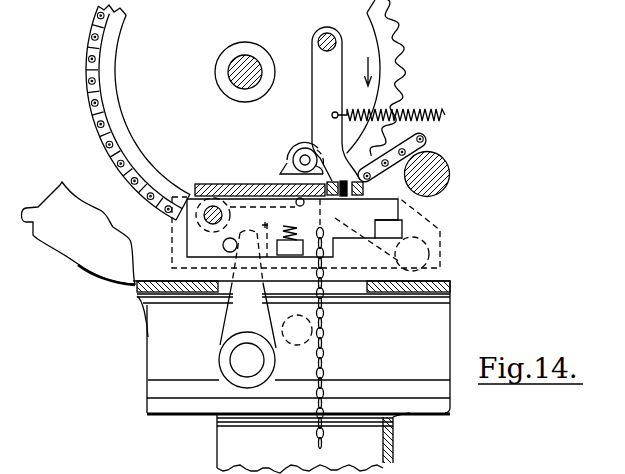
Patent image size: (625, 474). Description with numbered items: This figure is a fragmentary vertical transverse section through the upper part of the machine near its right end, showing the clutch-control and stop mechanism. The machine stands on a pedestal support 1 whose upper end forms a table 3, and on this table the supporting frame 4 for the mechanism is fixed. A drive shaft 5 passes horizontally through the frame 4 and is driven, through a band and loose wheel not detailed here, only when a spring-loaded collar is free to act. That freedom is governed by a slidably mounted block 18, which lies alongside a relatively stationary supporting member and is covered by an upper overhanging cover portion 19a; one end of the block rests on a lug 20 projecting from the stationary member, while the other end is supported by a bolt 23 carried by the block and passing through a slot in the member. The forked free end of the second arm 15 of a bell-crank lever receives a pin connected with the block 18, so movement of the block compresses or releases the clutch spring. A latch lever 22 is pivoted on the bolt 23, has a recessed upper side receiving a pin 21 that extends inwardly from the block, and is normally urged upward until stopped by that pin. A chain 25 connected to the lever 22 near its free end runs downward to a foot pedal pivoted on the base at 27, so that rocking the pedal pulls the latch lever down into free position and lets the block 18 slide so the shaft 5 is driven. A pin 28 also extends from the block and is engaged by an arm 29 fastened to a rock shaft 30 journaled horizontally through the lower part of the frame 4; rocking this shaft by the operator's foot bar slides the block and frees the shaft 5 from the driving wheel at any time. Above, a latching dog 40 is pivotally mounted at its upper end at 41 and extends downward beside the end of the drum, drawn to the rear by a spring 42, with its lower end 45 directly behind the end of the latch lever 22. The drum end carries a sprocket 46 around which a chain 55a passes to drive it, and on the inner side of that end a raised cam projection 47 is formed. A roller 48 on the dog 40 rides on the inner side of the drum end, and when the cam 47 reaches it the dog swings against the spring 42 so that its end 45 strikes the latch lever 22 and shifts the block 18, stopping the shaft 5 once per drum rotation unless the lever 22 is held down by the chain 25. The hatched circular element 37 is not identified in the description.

The pedestal support 1 is at (395, 447).
The table 3 is at (448, 416).
The supporting frame 4 is at (157, 338).
The drive shaft 5 is at (451, 177).
The second arm 15 is at (426, 140).
The slidably mounted block 18 is at (195, 227).
The upper overhanging cover portion 19a is at (234, 184).
The lug 20 is at (403, 229).
The pin 21 is at (297, 204).
The latch lever 22 is at (294, 285).
The bolt 23 is at (213, 205).
The chain 25 is at (324, 347).
The pedal pivot 27 is at (350, 201).
The pin 28 is at (228, 252).
The arm 29 is at (232, 312).
The rock shaft 30 is at (240, 367).
The shaft 37 is at (240, 82).
The latching dog 40 is at (318, 75).
The pivot 41 is at (340, 38).
The spring 42 is at (413, 110).
The lower end of dog 45 is at (412, 254).
The sprocket 46 is at (390, 65).
The raised cam projection 47 is at (290, 165).
The roller 48 is at (303, 148).
The chain 55a is at (93, 104).